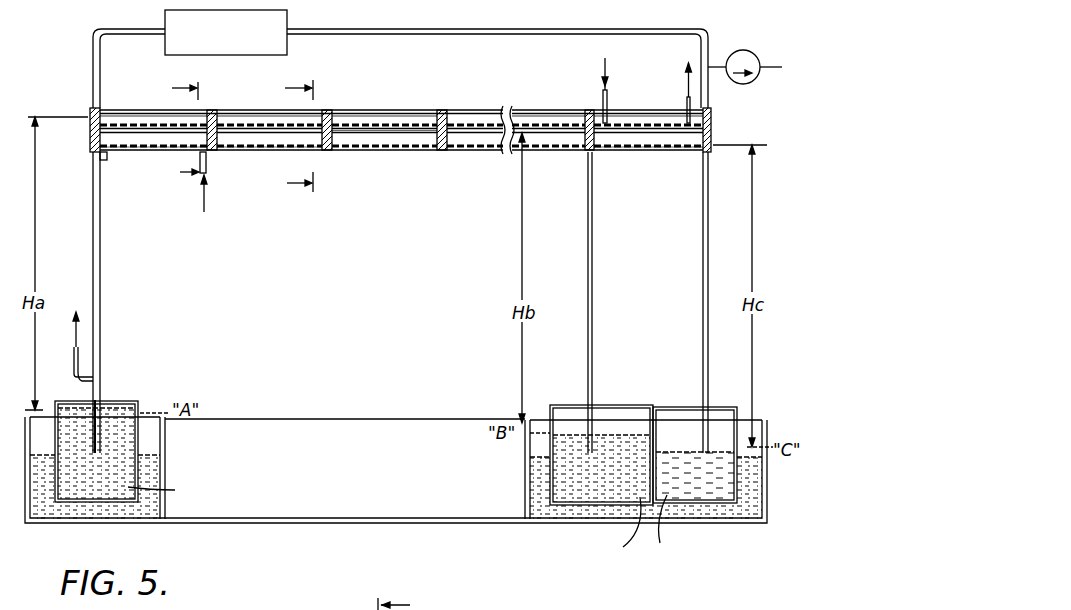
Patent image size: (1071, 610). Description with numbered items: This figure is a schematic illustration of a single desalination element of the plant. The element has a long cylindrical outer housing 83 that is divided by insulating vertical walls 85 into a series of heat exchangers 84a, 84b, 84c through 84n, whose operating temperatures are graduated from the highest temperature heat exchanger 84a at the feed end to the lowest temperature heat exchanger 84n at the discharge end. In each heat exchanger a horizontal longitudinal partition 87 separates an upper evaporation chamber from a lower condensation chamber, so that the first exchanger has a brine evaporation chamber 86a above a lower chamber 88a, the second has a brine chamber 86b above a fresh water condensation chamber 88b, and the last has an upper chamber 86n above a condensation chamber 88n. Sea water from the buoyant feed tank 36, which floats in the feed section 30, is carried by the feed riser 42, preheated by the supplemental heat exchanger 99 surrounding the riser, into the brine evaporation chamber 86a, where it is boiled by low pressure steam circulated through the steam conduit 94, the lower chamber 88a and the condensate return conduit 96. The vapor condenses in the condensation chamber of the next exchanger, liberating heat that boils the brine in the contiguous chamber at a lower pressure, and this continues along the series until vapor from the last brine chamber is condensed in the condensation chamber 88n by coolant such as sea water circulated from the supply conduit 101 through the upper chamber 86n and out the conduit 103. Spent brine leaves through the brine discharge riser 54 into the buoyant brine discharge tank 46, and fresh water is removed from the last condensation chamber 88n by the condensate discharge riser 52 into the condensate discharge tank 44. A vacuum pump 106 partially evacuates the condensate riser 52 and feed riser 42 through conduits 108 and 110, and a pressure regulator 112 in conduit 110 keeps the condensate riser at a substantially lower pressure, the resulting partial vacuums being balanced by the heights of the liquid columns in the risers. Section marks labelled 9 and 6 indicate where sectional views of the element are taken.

The pressure regulator 112 is at (165, 44).
The conduit 110 is at (637, 32).
The conduit 108 is at (712, 96).
The vacuum pump 106 is at (763, 78).
The high temperature heat exchanger 84a is at (133, 148).
The brine evaporation chamber 86a is at (127, 113).
The lower chamber 88a is at (150, 143).
The heat exchanger 84b is at (277, 142).
The brine chamber 86b is at (245, 117).
The fresh water condensation chamber 88b is at (277, 143).
The heat exchanger 84c is at (402, 153).
The outer housing 83 is at (373, 108).
The horizontal longitudinal partition 87 is at (407, 133).
The insulating vertical walls 85 is at (445, 150).
The lowest temperature heat exchanger 84n is at (623, 113).
The upper chamber 86n is at (650, 118).
The condensation chamber 88n is at (652, 142).
The supply conduit 101 is at (602, 97).
The conduit 103 is at (686, 100).
The section line 9 is at (175, 138).
The section line 6 is at (293, 140).
The steam conduit 94 is at (198, 157).
The supplemental heat exchanger 99 is at (102, 270).
The feed riser 42 is at (100, 389).
The condensate return conduit 96 is at (74, 365).
The feed section 30 is at (157, 468).
The feed tank 36 is at (138, 440).
The brine discharge tank 46 is at (553, 508).
The condensate discharge tank 44 is at (723, 506).
The brine discharge riser 54 is at (587, 277).
The condensate discharge riser 52 is at (702, 266).